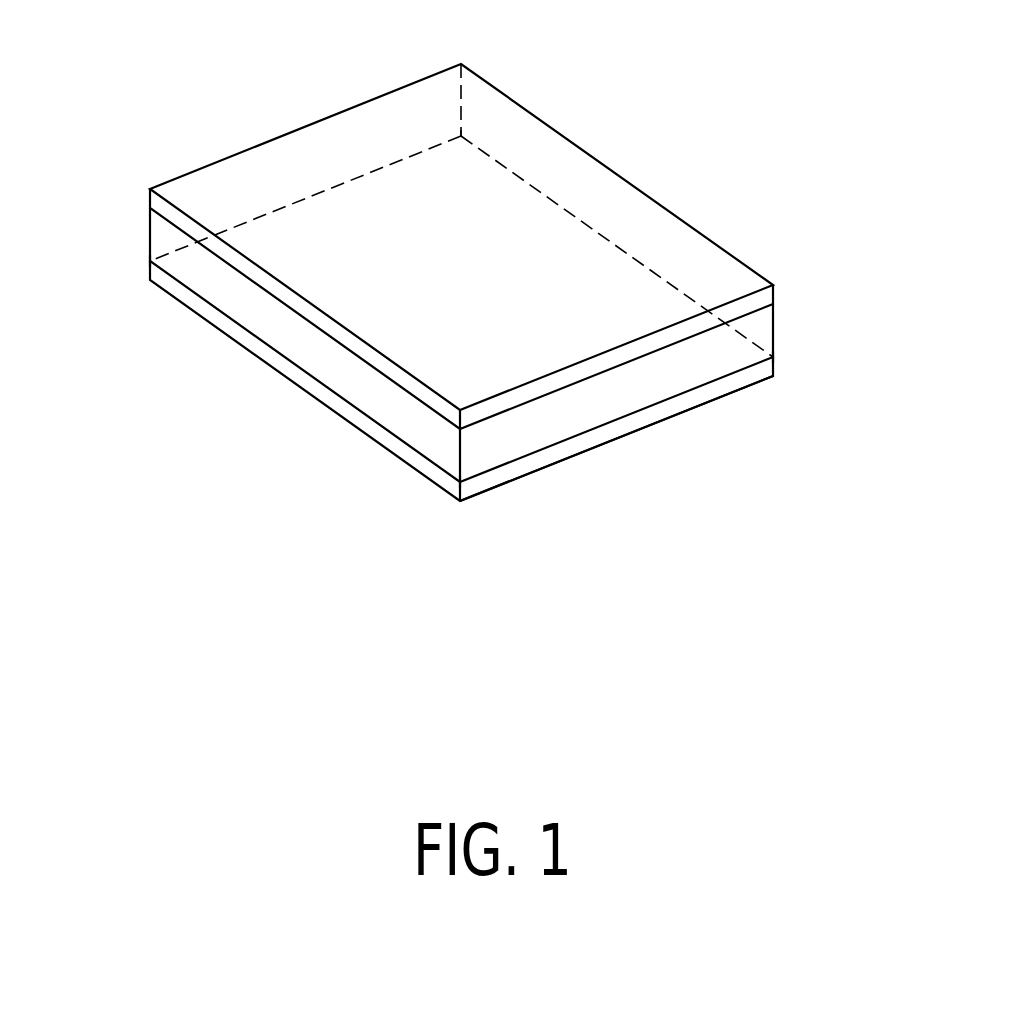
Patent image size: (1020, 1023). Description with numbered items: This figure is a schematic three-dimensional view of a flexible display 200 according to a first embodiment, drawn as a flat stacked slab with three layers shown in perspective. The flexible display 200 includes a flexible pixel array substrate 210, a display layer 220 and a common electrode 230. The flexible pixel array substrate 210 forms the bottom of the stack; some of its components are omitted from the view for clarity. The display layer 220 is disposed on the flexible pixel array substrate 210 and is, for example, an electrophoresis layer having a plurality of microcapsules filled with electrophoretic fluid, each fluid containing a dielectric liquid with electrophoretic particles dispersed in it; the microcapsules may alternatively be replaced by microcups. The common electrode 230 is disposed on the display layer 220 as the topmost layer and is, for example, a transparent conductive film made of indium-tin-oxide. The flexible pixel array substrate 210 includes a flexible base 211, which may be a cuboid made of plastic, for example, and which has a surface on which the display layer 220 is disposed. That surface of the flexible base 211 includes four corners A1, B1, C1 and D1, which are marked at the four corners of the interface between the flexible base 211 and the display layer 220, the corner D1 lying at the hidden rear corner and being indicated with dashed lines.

The flexible display 200 is at (477, 312).
The flexible pixel array substrate 210 is at (778, 367).
The flexible base 211 is at (560, 455).
The display layer 220 is at (783, 330).
The common electrode 230 is at (783, 291).
The corner A1 is at (150, 261).
The corner B1 is at (458, 485).
The corner C1 is at (772, 358).
The corner D1 is at (463, 135).